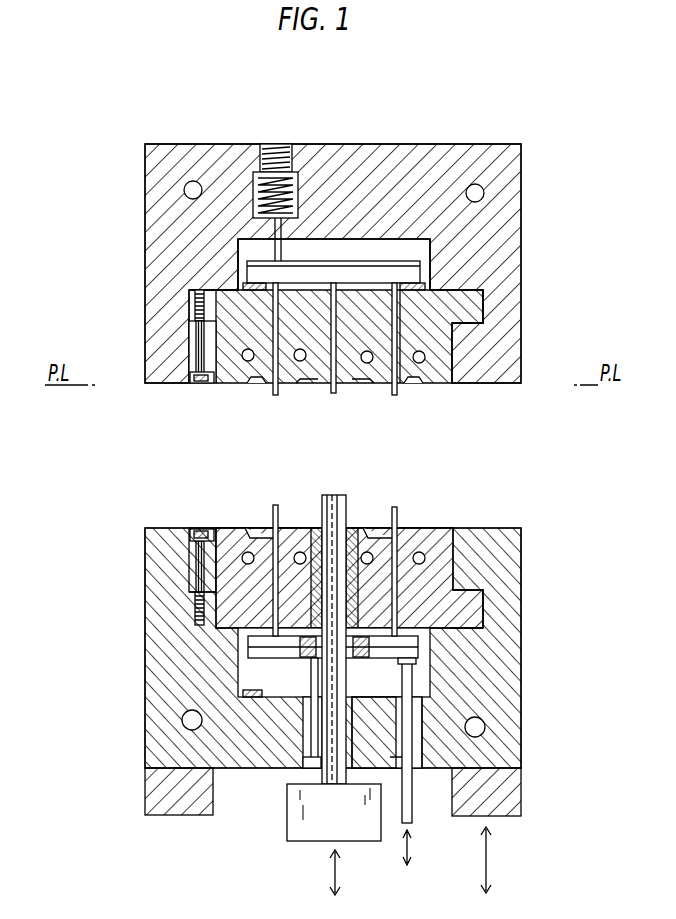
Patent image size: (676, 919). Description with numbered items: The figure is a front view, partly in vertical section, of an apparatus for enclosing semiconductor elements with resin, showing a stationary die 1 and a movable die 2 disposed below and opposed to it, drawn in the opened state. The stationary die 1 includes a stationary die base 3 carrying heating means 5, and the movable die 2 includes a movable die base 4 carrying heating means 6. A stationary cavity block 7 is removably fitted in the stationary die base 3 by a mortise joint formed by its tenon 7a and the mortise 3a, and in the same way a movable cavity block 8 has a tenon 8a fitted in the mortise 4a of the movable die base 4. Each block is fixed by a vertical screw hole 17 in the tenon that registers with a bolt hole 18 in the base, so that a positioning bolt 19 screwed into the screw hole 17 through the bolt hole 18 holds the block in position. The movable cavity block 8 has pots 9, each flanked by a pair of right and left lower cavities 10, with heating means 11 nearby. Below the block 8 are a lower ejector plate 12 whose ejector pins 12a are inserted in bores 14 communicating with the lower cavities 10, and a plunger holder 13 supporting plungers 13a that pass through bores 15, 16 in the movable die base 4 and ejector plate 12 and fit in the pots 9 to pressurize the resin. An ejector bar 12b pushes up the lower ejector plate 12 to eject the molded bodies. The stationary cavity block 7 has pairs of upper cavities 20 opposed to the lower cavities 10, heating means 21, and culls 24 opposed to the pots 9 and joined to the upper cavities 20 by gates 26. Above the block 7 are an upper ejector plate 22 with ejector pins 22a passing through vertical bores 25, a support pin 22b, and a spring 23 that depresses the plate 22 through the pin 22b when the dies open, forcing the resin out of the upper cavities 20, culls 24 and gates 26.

The stationary die 1 is at (487, 138).
The movable die 2 is at (487, 526).
The stationary die base 3 is at (515, 173).
The mortise 3a is at (331, 264).
The movable die base 4 is at (505, 553).
The mortise 4a is at (195, 626).
The heating means 5 is at (190, 190).
The heating means 6 is at (188, 720).
The stationary cavity block 7 is at (440, 360).
The tenon 7a is at (470, 300).
The movable cavity block 8 is at (440, 578).
The tenon 8a is at (462, 610).
The pot 9 is at (311, 575).
The lower cavity 10 is at (285, 530).
The heating means 11 is at (248, 565).
The lower ejector plate 12 is at (262, 640).
The ejector pin 12a is at (276, 505).
The ejector bar 12b is at (410, 822).
The plunger holder 13 is at (288, 820).
The plunger 13a is at (358, 486).
The bore 14 is at (396, 580).
The bore 15 is at (313, 697).
The bore 16 is at (404, 664).
The screw hole 17 is at (197, 306).
The bolt hole 18 is at (199, 335).
The positioning bolt 19 is at (196, 360).
The upper cavity 20 is at (262, 383).
The heating means 21 is at (300, 349).
The upper ejector plate 22 is at (385, 262).
The ejector pin 22a is at (276, 395).
The support pin 22b is at (278, 248).
The spring 23 is at (296, 198).
The cull 24 is at (334, 393).
The vertical bore 25 is at (396, 325).
The gate 26 is at (305, 383).